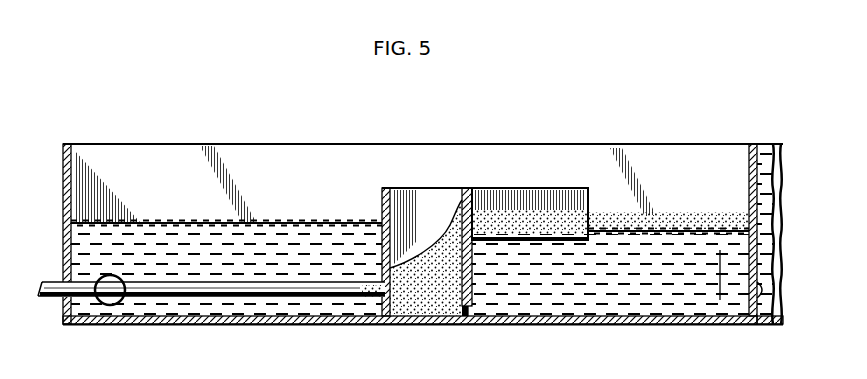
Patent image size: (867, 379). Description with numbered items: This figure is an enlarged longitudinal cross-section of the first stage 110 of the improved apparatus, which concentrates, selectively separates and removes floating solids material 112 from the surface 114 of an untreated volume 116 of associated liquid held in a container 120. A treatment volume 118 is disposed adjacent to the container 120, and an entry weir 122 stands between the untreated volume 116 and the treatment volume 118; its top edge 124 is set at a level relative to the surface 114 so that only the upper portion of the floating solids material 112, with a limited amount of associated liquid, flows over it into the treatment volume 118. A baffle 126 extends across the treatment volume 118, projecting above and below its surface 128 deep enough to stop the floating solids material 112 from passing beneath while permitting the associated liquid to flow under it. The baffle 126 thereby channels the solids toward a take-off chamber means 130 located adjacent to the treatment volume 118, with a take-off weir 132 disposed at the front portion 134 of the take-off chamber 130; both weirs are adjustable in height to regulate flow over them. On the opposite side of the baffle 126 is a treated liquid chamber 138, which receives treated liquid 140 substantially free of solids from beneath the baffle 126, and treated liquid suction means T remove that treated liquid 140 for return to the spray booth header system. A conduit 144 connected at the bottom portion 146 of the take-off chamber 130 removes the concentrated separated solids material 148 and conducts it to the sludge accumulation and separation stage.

The first stage 110 is at (661, 118).
The floating solids material 112 is at (775, 146).
The surface of the untreated volume 114 is at (755, 146).
The untreated volume 116 is at (774, 326).
The treatment volume 118 is at (622, 233).
The container 120 is at (727, 326).
The entry weir 122 is at (723, 258).
The top edge 124 is at (748, 258).
The baffle 126 is at (528, 198).
The surface of the treatment volume 128 is at (609, 210).
The take-off chamber means 130 is at (418, 200).
The take-off weir 132 is at (478, 292).
The front portion 134 is at (465, 320).
The treated liquid chamber 138 is at (129, 156).
The treated liquid 140 is at (226, 269).
The conduit 144 is at (235, 300).
The bottom portion 146 is at (390, 324).
The concentrated separated solids material 148 is at (426, 258).
The treated liquid suction means T is at (115, 306).